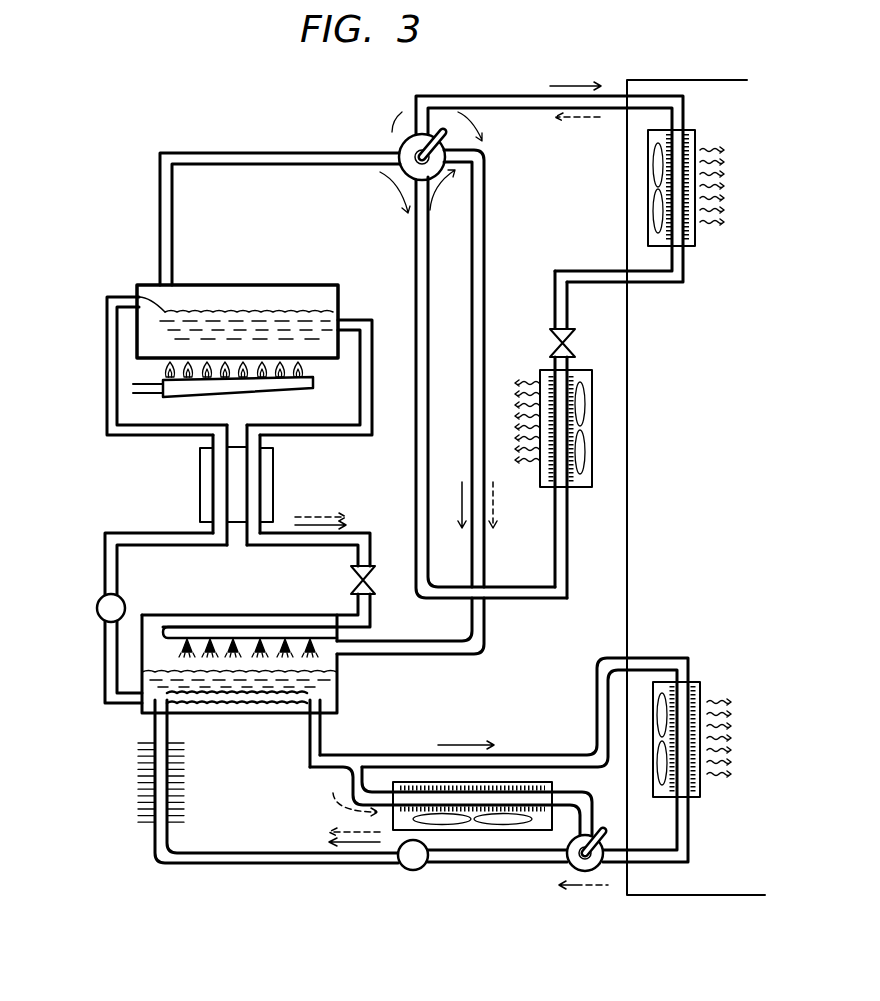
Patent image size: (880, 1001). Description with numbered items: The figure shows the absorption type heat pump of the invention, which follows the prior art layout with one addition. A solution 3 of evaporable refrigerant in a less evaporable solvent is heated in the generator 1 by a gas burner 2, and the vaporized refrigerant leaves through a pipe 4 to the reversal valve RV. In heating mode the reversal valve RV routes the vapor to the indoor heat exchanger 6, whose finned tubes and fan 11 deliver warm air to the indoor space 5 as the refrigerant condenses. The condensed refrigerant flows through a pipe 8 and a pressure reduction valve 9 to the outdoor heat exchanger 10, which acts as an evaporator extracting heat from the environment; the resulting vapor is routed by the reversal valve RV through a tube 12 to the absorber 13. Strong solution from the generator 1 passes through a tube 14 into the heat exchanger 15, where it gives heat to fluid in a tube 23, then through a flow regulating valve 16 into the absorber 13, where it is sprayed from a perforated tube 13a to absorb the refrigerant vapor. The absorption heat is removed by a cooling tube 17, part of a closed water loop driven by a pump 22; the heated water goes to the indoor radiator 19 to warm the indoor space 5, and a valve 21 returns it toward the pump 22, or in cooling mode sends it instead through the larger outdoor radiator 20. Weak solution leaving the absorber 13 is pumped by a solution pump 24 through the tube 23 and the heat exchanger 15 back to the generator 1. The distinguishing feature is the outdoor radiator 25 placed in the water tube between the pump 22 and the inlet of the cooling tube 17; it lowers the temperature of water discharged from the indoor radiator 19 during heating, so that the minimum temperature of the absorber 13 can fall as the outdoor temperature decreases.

The generator 1 is at (295, 283).
The gas burner 2 is at (180, 399).
The solution 3 is at (330, 322).
The pipe 4 is at (318, 166).
The indoor space 5 is at (725, 895).
The indoor heat exchanger 6 is at (657, 174).
The pipe 8 is at (585, 272).
The pressure reduction valve 9 is at (573, 342).
The outdoor heat exchanger 10 is at (582, 488).
The fan 11 is at (655, 213).
The tube 12 is at (405, 655).
The absorber 13 is at (201, 614).
The perforated tube 13a is at (264, 636).
The tube 14 is at (332, 437).
The heat exchanger 15 is at (200, 478).
The flow regulating valve 16 is at (353, 580).
The cooling tube 17 is at (235, 706).
The indoor radiator 19 is at (695, 682).
The outdoor radiator 20 is at (553, 786).
The valve 21 is at (568, 866).
The pump 22 is at (409, 872).
The tube 23 is at (133, 534).
The solution pump 24 is at (96, 604).
The outdoor heat exchanger or radiator 25 is at (184, 795).
The reversal valve RV is at (398, 128).